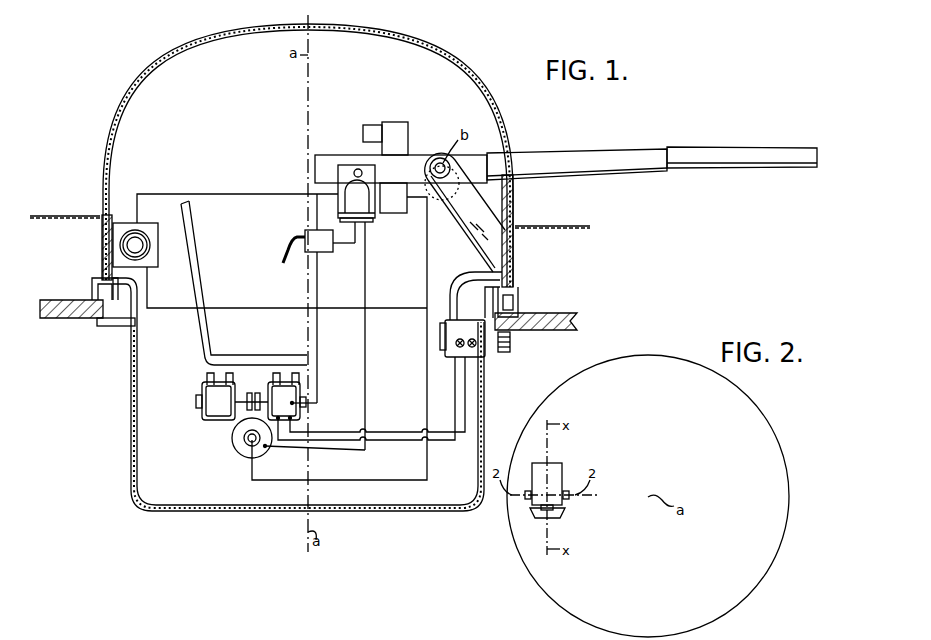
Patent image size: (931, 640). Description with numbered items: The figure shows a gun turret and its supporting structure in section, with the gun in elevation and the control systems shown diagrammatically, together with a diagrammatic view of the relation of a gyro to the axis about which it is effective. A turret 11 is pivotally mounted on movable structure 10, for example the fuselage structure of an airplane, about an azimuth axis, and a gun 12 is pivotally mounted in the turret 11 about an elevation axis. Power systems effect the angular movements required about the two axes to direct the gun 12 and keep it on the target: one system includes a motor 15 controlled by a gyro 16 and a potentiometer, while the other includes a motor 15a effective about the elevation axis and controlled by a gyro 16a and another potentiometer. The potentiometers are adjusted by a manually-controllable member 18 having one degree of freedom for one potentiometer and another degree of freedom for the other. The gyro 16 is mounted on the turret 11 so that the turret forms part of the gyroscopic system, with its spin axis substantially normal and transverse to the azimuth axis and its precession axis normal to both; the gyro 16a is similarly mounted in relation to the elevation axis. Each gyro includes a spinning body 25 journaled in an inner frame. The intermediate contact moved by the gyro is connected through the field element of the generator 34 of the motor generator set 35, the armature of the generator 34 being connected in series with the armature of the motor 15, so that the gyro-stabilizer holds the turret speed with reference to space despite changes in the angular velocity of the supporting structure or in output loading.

In FIG. 1, the movable structure 10 is at (548, 315).
In FIG. 1, the turret 11 is at (516, 263).
In FIG. 1, the gun 12 is at (567, 158).
In FIG. 1, the motor 15 is at (455, 358).
In FIG. 1, the motor 15a is at (465, 212).
In FIG. 1, the gyro 16 is at (147, 247).
In FIG. 2, the gyro 16 is at (558, 470).
In FIG. 1, the gyro 16a is at (352, 197).
In FIG. 1, the manually-controllable member 18 is at (296, 238).
In FIG. 2, the spinning body 25 is at (563, 512).
In FIG. 1, the generator 34 is at (304, 406).
In FIG. 1, the motor generator set 35 is at (200, 403).